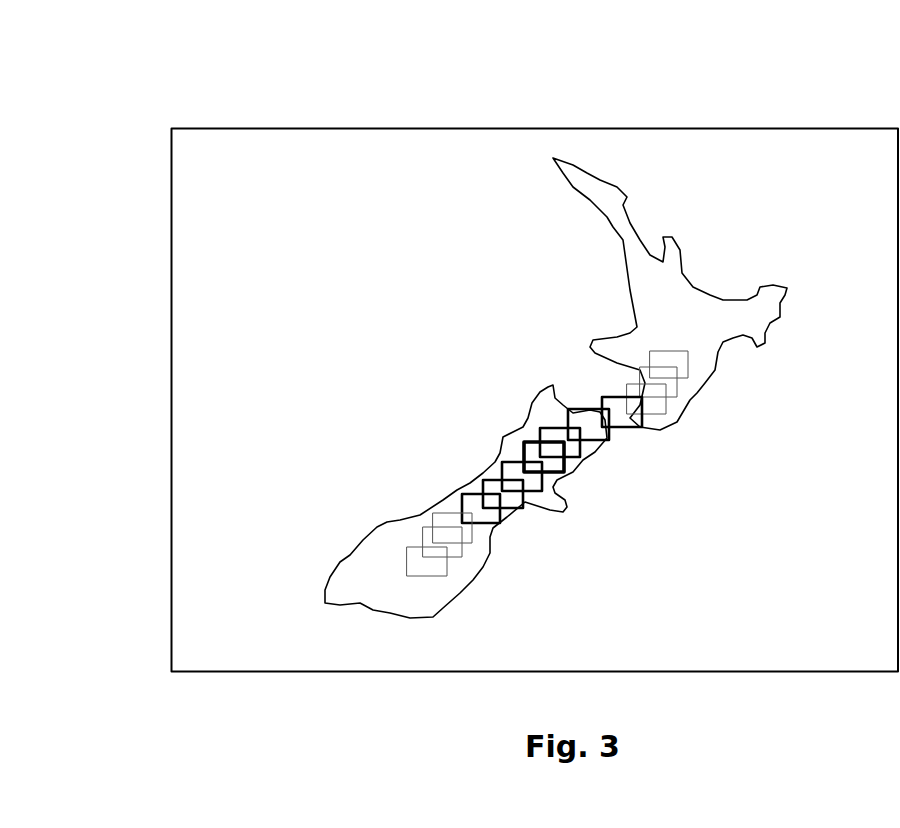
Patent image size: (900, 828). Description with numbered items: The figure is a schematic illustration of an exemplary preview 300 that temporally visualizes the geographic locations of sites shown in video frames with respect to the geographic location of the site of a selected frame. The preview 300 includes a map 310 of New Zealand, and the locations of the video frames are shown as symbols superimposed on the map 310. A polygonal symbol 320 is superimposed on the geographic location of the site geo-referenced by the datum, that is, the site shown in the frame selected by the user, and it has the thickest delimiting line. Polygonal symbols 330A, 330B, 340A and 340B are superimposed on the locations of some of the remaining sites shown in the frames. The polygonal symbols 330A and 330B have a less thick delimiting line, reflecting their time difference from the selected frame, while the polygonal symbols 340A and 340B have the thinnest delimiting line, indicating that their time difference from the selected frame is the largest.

The preview 300 is at (137, 41).
The map 310 is at (171, 385).
The polygonal symbol 320 is at (560, 470).
The polygonal symbol 330A is at (607, 438).
The polygonal symbol 330B is at (541, 513).
The polygonal symbol 340A is at (667, 387).
The polygonal symbol 340B is at (462, 552).